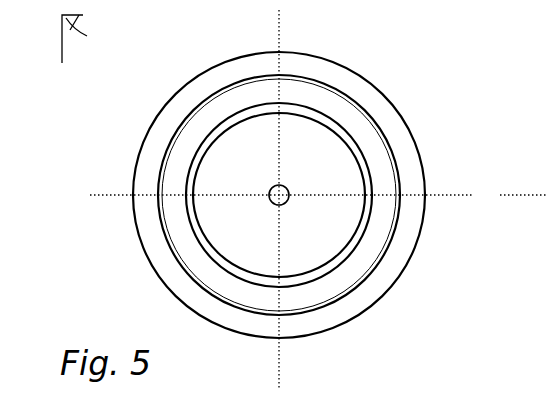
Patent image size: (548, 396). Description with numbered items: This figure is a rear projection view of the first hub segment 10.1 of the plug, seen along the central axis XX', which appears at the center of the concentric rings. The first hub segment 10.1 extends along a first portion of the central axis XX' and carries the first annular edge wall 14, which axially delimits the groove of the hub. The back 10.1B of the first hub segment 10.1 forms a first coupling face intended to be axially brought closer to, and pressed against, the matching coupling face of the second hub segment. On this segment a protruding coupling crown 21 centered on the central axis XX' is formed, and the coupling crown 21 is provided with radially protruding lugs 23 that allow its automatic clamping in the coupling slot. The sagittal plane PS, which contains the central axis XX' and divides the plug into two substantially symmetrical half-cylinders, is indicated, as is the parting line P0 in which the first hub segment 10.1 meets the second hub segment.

The first hub segment 10.1 is at (392, 67).
The back of the first hub segment 10.1B is at (372, 136).
The first annular edge wall 14 is at (400, 250).
The coupling crown 21 is at (358, 173).
The radially protruding lugs 23 is at (248, 106).
The parting line P0 is at (89, 39).
The central axis XX' is at (178, 246).
The sagittal plane PS is at (279, 367).